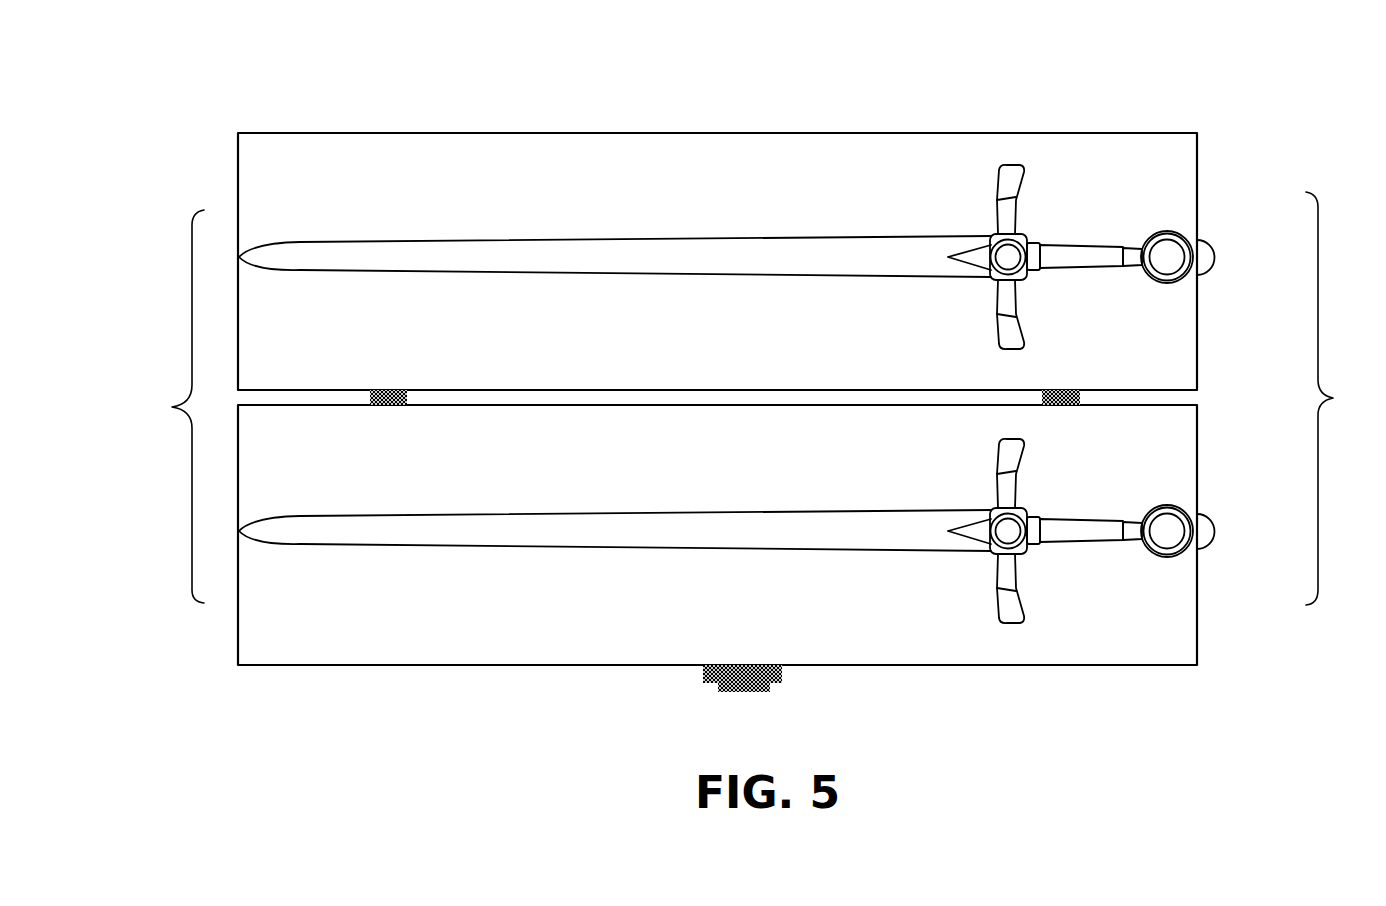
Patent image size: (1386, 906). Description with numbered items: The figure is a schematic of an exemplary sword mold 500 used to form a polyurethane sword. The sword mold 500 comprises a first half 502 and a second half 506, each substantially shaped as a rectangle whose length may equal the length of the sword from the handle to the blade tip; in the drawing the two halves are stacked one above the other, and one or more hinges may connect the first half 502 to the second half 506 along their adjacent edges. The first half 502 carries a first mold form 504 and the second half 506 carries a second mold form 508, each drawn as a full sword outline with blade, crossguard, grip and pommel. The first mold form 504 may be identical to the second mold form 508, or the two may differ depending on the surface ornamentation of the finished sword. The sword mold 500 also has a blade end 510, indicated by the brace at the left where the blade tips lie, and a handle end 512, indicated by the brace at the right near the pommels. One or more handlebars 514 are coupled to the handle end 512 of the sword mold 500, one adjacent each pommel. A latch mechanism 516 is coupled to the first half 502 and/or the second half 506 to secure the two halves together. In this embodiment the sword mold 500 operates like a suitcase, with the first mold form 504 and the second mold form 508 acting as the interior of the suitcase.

The sword mold 500 is at (322, 82).
The first half 502 is at (1145, 168).
The first mold form 504 is at (1020, 170).
The second half 506 is at (1146, 622).
The second mold form 508 is at (1004, 618).
The blade end 510 is at (603, 406).
The handle end 512 is at (1346, 398).
The handlebars 514 is at (1212, 263).
The latch mechanism 516 is at (740, 692).